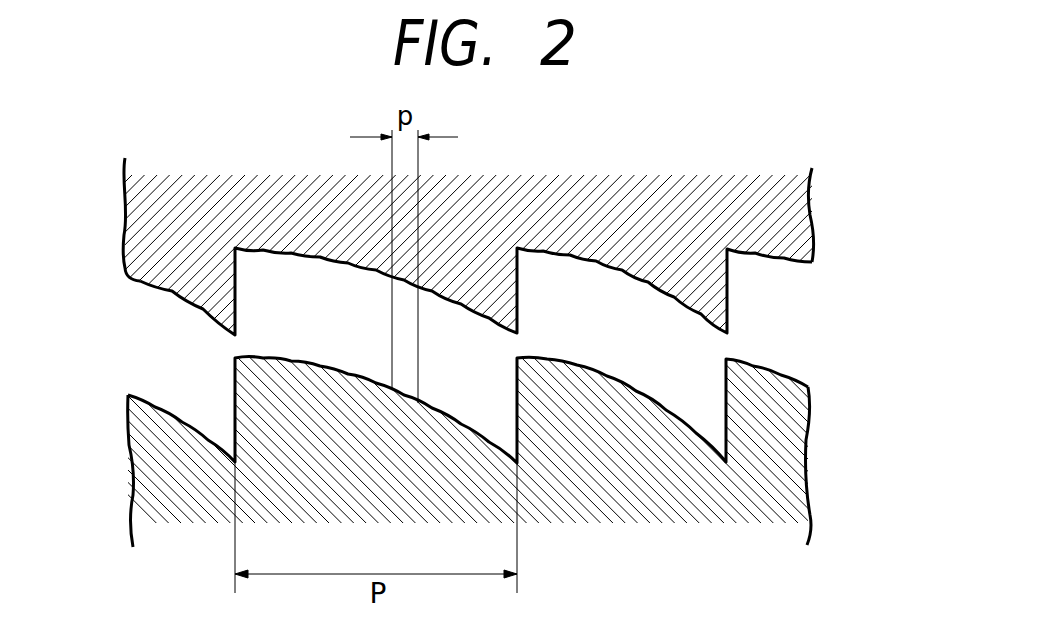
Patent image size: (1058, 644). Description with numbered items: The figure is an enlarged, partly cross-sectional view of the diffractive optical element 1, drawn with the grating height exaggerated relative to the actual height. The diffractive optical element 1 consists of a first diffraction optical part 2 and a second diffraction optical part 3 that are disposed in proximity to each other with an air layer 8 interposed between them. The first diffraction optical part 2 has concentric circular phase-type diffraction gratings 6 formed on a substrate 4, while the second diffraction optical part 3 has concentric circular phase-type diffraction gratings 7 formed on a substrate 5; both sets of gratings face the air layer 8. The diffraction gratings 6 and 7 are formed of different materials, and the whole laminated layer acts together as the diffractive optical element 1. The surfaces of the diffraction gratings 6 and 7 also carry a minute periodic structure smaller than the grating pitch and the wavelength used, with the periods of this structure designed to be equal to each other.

The diffractive optical element 1 is at (913, 313).
The first diffraction optical part 2 is at (873, 407).
The second diffraction optical part 3 is at (873, 217).
The substrate 4 is at (790, 491).
The substrate 5 is at (792, 230).
The diffraction gratings 6 is at (680, 417).
The diffraction gratings 7 is at (706, 285).
The air layer 8 is at (155, 350).